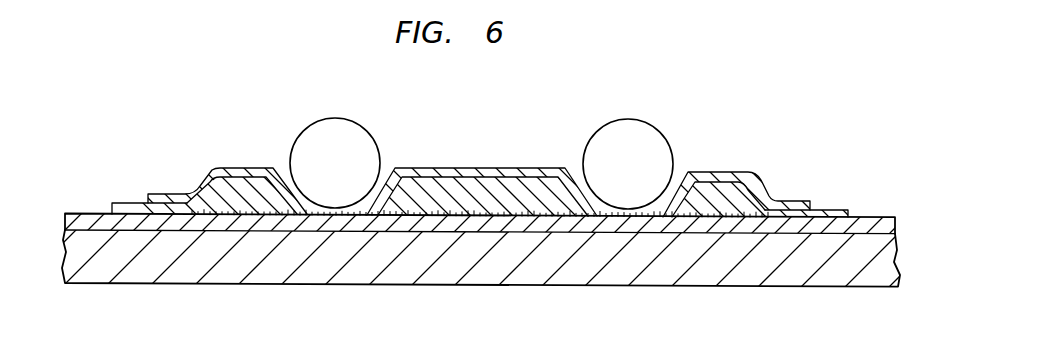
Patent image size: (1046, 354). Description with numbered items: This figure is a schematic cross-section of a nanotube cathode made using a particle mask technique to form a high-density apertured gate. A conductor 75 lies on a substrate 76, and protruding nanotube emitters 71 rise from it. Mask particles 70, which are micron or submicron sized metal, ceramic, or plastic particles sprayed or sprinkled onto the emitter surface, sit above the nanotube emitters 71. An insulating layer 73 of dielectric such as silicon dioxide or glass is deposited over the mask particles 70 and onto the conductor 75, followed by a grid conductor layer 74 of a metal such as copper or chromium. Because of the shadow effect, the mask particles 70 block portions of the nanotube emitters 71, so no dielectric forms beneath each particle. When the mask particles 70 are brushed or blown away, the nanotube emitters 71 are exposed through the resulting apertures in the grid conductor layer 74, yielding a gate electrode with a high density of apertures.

The mask particles 70 is at (352, 124).
The nanotube emitters 71 is at (236, 207).
The insulating layer 73 is at (118, 206).
The grid conductor layer 74 is at (167, 193).
The conductor 75 is at (75, 214).
The substrate 76 is at (115, 284).